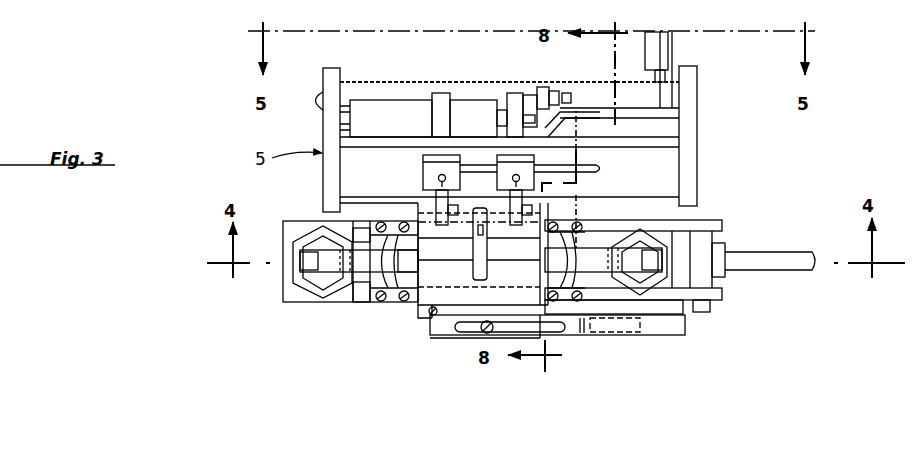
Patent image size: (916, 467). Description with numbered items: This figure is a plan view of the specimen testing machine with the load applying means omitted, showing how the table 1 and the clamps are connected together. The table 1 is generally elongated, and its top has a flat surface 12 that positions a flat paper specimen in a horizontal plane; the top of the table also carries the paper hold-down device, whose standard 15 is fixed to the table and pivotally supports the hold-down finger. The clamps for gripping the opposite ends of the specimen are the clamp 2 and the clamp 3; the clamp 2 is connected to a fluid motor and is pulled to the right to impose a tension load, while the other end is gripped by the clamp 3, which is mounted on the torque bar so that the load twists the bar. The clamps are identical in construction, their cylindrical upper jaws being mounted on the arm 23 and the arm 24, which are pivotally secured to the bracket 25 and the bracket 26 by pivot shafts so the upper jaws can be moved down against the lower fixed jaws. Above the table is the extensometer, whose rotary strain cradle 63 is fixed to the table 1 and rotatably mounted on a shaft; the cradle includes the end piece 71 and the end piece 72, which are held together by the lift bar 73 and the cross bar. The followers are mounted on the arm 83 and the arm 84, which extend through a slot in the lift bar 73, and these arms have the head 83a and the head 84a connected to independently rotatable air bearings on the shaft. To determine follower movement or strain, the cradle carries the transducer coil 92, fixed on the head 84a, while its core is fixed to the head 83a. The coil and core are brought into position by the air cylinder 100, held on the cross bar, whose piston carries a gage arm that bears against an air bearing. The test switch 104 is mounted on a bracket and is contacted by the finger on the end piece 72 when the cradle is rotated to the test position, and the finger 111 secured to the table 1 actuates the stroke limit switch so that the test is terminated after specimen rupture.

The table 1 is at (417, 305).
The clamp 2 is at (693, 298).
The clamp 3 is at (276, 288).
The flat surface 12 is at (580, 322).
The standard 15 is at (477, 262).
The arm 23 is at (360, 265).
The arm 24 is at (605, 250).
The bracket 25 is at (670, 236).
The bracket 26 is at (295, 222).
The rotary strain cradle 63 is at (468, 95).
The end piece 71 is at (690, 97).
The end piece 72 is at (325, 125).
The lift bar 73 is at (665, 160).
The arm 83 is at (436, 205).
The head 83a is at (443, 93).
The arm 84 is at (520, 203).
The head 84a is at (515, 97).
The transducer coil 92 is at (400, 105).
The air cylinder 100 is at (378, 83).
The test switch 104 is at (655, 35).
The finger 111 is at (655, 335).